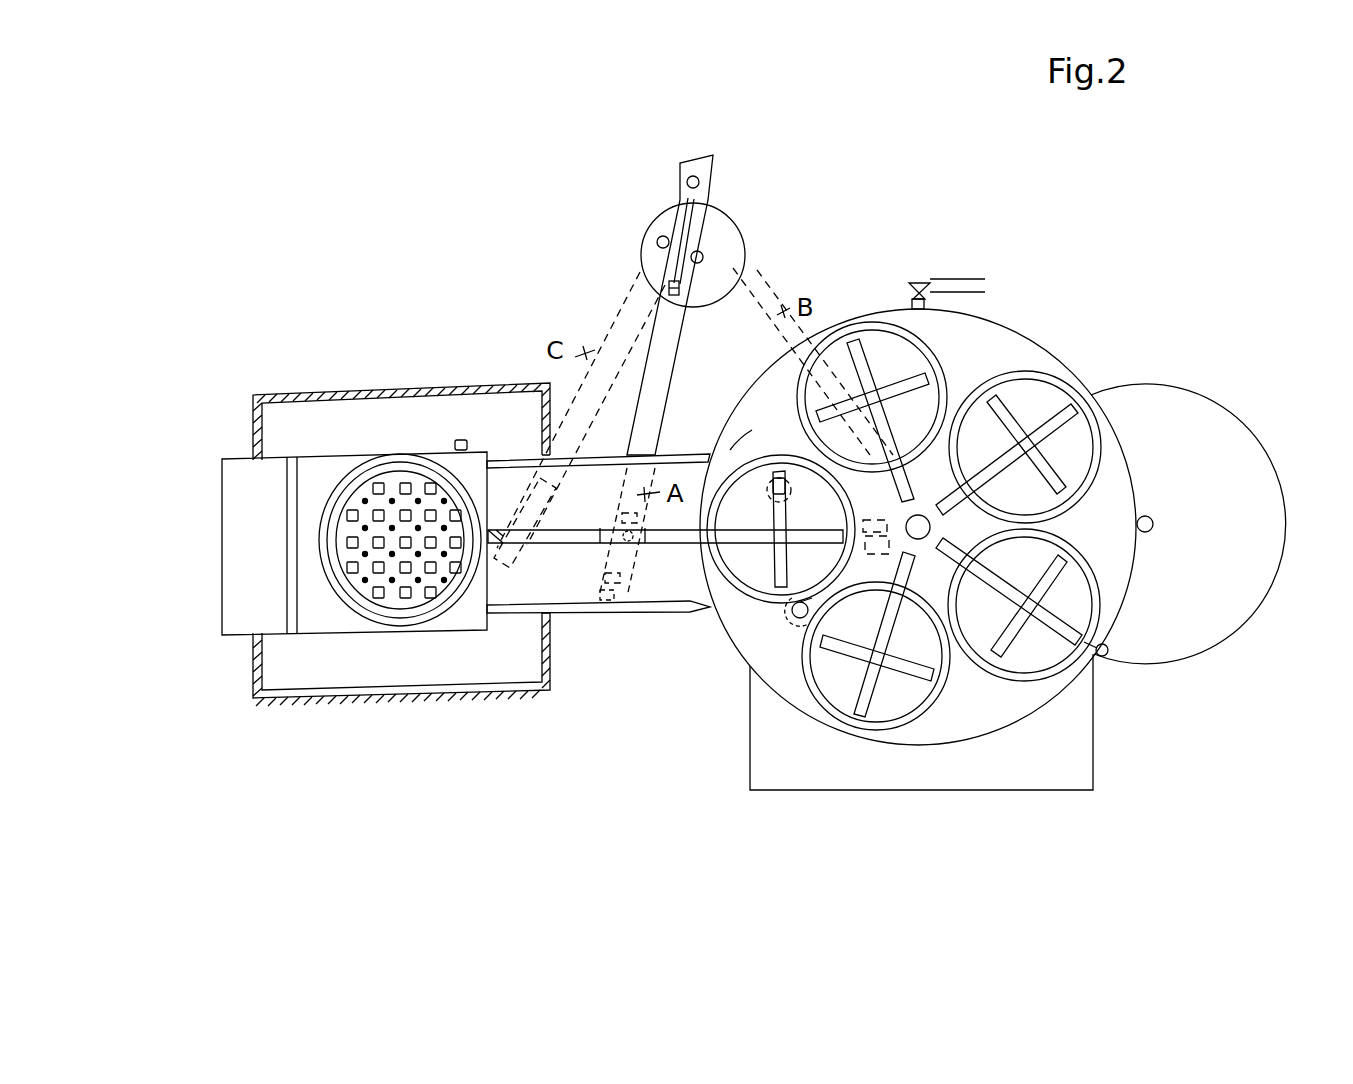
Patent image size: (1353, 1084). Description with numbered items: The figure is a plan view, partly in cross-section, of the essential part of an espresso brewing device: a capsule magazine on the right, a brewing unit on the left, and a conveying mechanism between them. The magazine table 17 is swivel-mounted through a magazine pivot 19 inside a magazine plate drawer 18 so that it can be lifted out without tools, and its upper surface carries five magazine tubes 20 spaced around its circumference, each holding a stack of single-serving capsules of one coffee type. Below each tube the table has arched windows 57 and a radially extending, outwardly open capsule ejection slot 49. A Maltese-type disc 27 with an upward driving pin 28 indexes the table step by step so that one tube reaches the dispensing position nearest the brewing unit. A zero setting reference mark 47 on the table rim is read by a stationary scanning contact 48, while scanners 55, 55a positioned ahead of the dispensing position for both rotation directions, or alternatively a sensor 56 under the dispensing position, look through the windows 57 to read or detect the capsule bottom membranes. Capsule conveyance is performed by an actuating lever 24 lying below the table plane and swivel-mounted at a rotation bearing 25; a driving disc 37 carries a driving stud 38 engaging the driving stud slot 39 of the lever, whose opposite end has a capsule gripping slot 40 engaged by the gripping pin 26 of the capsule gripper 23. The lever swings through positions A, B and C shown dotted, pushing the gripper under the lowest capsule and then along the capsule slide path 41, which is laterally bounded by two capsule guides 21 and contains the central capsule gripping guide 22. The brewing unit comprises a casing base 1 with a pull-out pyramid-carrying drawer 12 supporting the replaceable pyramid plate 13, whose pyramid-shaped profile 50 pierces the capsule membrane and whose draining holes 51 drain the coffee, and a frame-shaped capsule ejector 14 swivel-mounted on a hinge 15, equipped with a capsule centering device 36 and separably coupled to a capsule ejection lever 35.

The casing base 1 is at (298, 700).
The pyramid-carrying drawer 12 is at (243, 617).
The pyramid plate 13 is at (360, 502).
The capsule ejector 14 is at (312, 475).
The hinge 15 is at (290, 550).
The magazine table 17 is at (975, 707).
The magazine plate drawer 18 is at (1043, 770).
The magazine pivot 19 is at (923, 516).
The magazine tube 20 is at (905, 718).
The capsule guide 21 is at (513, 613).
The capsule gripping guide 22 is at (585, 538).
The capsule gripper 23 is at (633, 543).
The actuating lever 24 is at (663, 330).
The rotation bearing 25 is at (687, 178).
The gripping pin 26 is at (627, 540).
The Maltese-type disc 27 is at (1202, 618).
The driving pin 28 is at (1107, 660).
The capsule ejection lever 35 is at (462, 440).
The capsule centering device 36 is at (368, 615).
The driving disc 37 is at (710, 258).
The driving stud 38 is at (687, 280).
The driving stud slot 39 is at (680, 267).
The capsule gripping slot 40 is at (617, 597).
The capsule slide path 41 is at (678, 584).
The zero setting reference mark 47 is at (913, 303).
The stationary scanning contact 48 is at (932, 287).
The capsule ejection slot 49 is at (728, 447).
The pyramid-shaped profile 50 is at (378, 490).
The draining holes 51 is at (417, 498).
The scanner 55 is at (800, 618).
The scanner 55a is at (810, 447).
The sensor 56 is at (777, 490).
The windows 57 is at (893, 690).